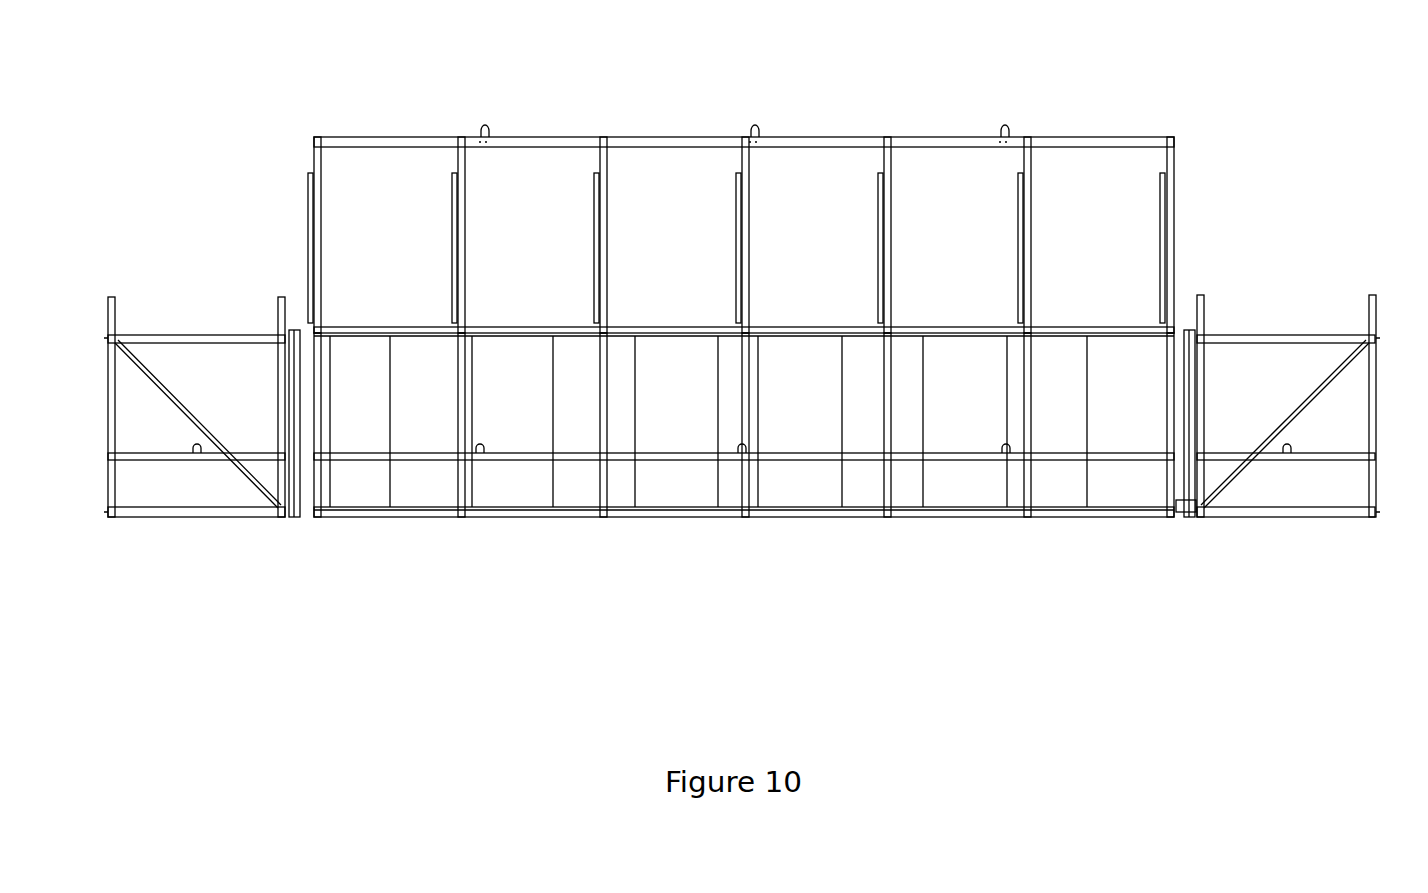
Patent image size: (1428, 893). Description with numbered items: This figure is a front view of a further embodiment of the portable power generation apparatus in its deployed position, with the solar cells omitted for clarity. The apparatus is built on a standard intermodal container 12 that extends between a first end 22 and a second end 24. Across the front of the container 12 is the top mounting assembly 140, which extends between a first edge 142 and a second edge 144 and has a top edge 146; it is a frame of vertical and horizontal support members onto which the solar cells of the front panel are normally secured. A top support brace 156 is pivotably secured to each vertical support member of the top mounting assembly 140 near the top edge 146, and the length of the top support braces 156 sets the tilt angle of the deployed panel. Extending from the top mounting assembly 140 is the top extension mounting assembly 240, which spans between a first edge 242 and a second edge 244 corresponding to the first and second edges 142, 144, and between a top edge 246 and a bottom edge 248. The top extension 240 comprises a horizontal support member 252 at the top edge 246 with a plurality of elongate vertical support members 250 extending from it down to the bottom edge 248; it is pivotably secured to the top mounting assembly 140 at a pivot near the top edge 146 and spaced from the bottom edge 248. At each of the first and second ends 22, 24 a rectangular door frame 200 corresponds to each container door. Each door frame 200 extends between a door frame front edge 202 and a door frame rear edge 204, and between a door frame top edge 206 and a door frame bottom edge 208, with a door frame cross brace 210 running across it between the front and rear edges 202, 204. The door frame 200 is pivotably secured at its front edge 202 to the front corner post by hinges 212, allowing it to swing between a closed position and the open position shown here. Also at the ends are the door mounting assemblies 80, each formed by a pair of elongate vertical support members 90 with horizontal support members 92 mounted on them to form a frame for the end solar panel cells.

The intermodal container 12 is at (1050, 492).
The first end 22 is at (755, 176).
The second end 24 is at (1227, 223).
The door mounting assembly 80 is at (1382, 300).
The vertical support members 90 is at (1203, 327).
The horizontal support members 92 is at (1272, 333).
The top mounting assembly 140 is at (1175, 243).
The first edge 142 is at (306, 212).
The second edge 144 is at (1178, 207).
The top edge 146 is at (454, 172).
The top support brace 156 is at (462, 247).
The door frame 200 is at (752, 398).
The door frame front edge 202 is at (1197, 512).
The door frame rear edge 204 is at (1379, 410).
The door frame top edge 206 is at (1323, 318).
The door frame bottom edge 208 is at (1258, 519).
The door frame cross brace 210 is at (1300, 435).
The hinges 212 is at (1196, 305).
The top extension mounting assembly 240 is at (715, 136).
The first edge 242 is at (313, 135).
The second edge 244 is at (1178, 140).
The top edge 246 is at (847, 136).
The bottom edge 248 is at (749, 207).
The vertical support members 250 is at (497, 147).
The horizontal support member 252 is at (580, 137).